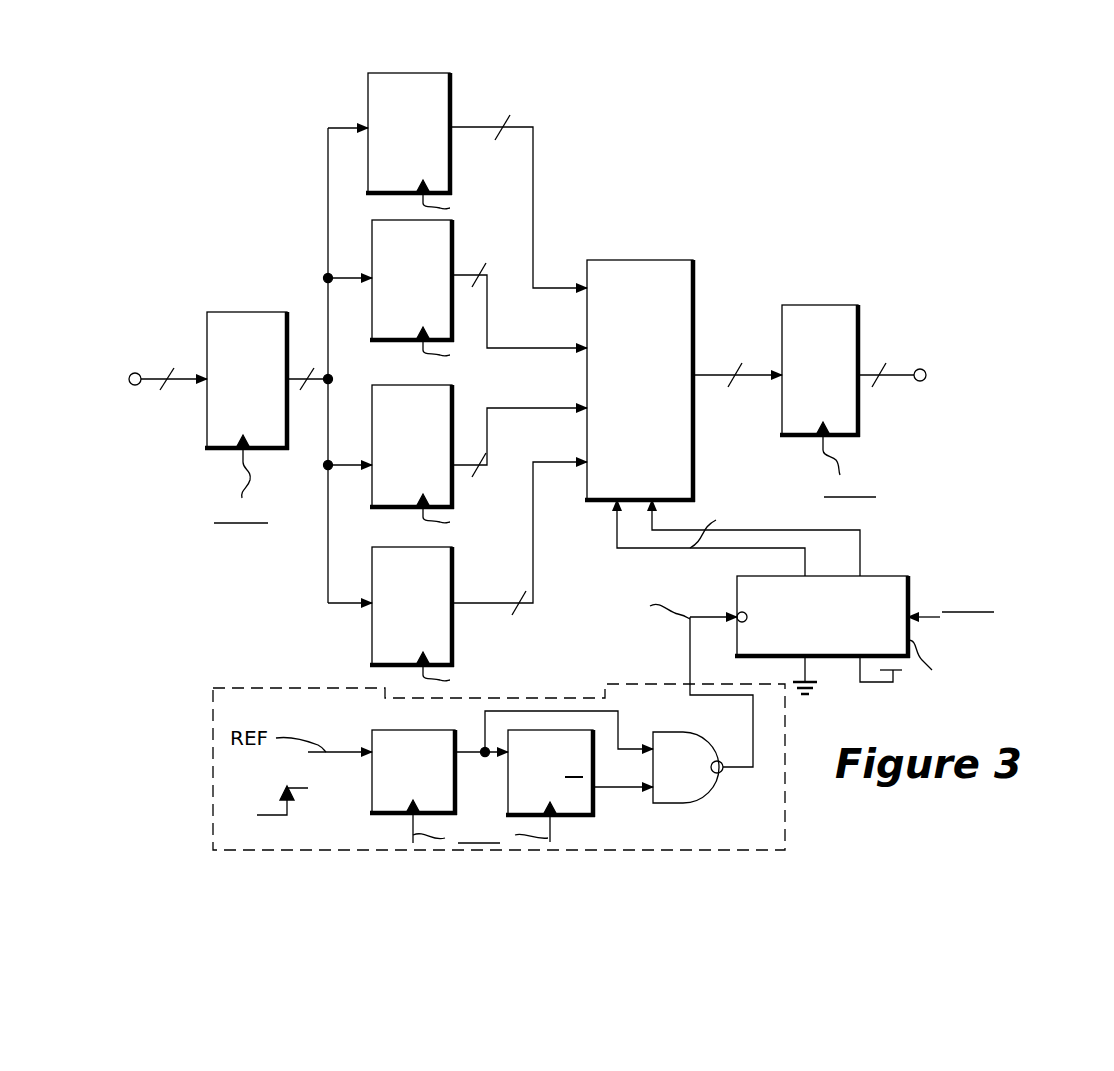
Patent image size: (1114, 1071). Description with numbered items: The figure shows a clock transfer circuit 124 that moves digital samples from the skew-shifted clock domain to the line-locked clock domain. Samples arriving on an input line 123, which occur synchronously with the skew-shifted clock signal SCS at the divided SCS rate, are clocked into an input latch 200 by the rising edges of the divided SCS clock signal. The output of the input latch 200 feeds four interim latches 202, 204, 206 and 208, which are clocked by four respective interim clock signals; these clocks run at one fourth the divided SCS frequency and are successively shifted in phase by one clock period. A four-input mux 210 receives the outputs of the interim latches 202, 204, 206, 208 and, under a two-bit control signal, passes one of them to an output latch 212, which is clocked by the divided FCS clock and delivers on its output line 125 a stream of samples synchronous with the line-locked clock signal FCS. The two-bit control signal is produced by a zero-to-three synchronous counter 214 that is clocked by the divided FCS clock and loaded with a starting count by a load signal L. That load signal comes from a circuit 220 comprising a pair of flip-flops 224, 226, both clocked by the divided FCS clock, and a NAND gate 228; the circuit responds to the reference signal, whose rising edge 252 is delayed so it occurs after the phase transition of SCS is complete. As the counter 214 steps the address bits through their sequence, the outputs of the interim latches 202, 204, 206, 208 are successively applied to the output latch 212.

The input data line 123 is at (136, 385).
The interpolation circuit 124 is at (792, 217).
The output data line 125 is at (918, 381).
The input latch 200 is at (288, 313).
The interim latch 202 is at (373, 88).
The interim latch 204 is at (373, 226).
The interim latch 206 is at (393, 388).
The interim latch 208 is at (412, 548).
The 4-input mux 210 is at (648, 268).
The output latch 212 is at (828, 306).
The 0-to-3 synchronous counter 214 is at (880, 576).
The load signal generating circuit 220 is at (304, 690).
The flip-flop 224 is at (392, 734).
The flip-flop 226 is at (593, 802).
The NAND gate 228 is at (702, 790).
The rising edge of the reference signal REF 252 is at (296, 810).